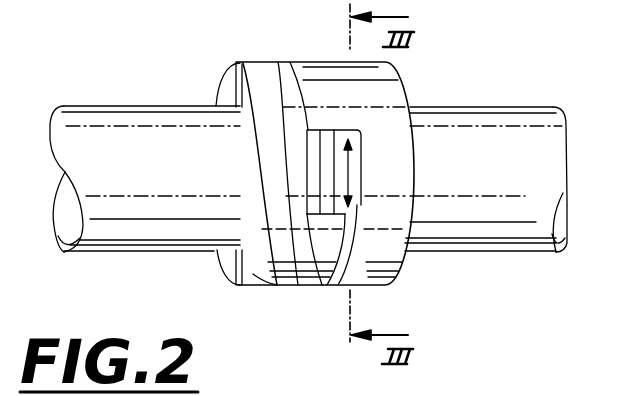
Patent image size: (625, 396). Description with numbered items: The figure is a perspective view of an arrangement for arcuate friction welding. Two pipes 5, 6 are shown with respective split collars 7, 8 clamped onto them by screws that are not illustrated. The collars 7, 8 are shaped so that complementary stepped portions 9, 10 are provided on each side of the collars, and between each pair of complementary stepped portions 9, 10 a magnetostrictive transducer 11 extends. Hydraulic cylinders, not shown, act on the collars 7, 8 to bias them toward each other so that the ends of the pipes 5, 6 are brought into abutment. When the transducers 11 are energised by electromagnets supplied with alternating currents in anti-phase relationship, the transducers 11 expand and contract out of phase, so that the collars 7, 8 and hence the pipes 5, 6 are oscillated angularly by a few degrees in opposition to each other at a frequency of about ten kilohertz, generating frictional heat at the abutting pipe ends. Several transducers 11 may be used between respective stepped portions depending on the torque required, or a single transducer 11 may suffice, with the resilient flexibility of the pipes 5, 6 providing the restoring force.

The pipe 5 is at (122, 135).
The pipe 6 is at (503, 135).
The split collar 7 is at (238, 63).
The split collar 8 is at (320, 72).
The stepped portion 9 is at (282, 286).
The stepped portion 10 is at (343, 132).
The magnetostrictive transducer 11 is at (322, 177).